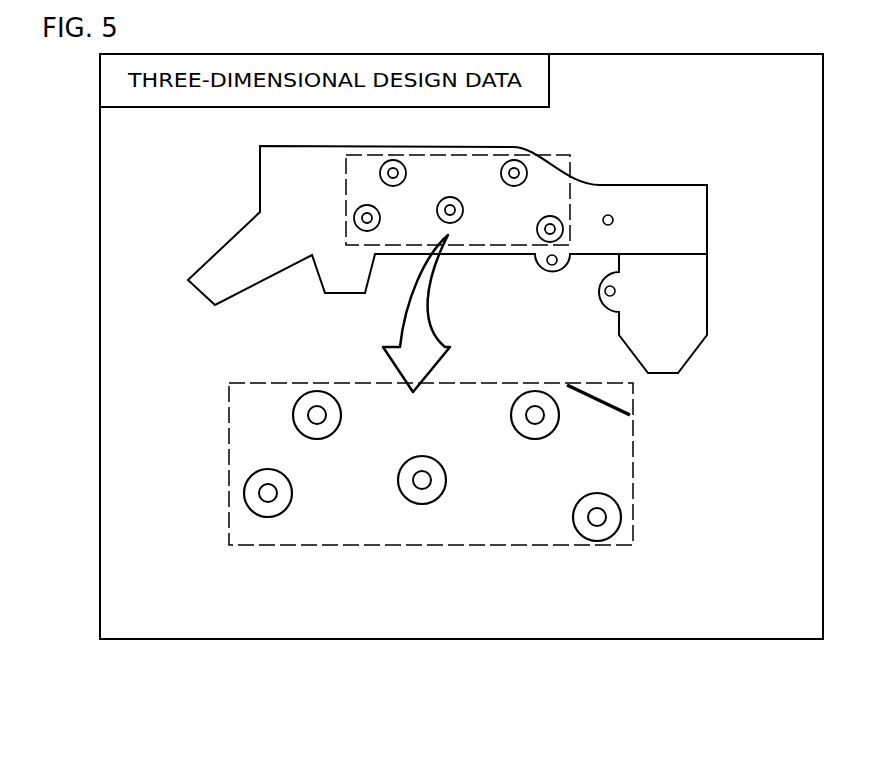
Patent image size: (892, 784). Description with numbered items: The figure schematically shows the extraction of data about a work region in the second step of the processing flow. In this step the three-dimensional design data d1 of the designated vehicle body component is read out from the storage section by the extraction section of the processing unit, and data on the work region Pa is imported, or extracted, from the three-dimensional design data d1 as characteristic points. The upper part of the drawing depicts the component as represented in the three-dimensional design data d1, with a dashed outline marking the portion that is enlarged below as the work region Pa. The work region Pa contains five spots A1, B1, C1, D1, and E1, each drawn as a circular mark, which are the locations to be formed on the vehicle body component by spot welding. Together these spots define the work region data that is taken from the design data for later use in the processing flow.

The three-dimensional design data d1 is at (600, 185).
The work region Pa is at (633, 438).
The spot A1 is at (295, 427).
The spot B1 is at (555, 420).
The spot C1 is at (255, 513).
The spot D1 is at (425, 503).
The spot E1 is at (617, 527).